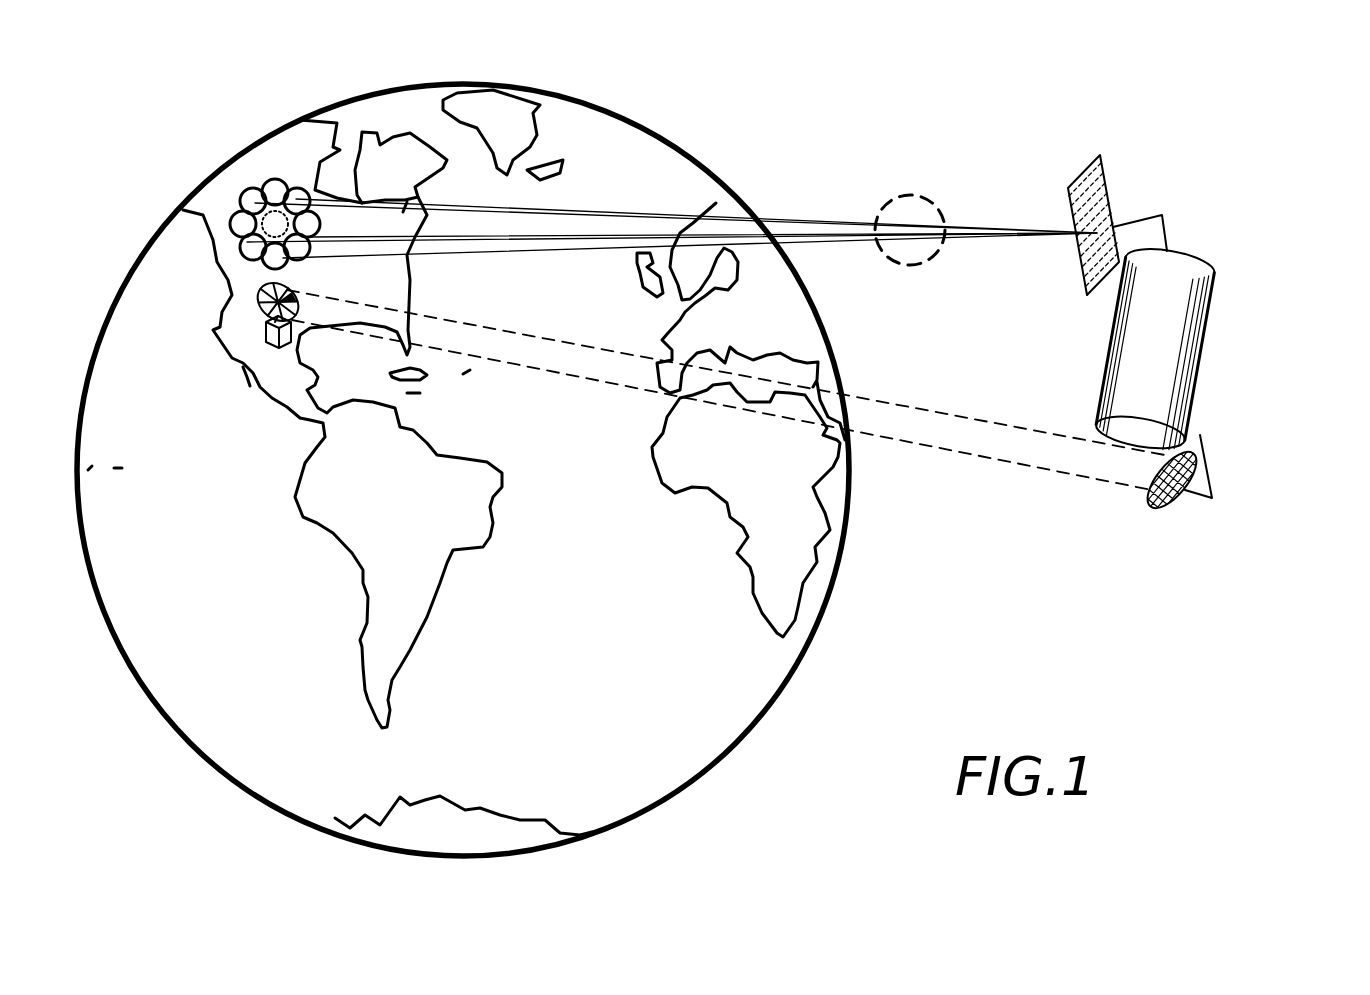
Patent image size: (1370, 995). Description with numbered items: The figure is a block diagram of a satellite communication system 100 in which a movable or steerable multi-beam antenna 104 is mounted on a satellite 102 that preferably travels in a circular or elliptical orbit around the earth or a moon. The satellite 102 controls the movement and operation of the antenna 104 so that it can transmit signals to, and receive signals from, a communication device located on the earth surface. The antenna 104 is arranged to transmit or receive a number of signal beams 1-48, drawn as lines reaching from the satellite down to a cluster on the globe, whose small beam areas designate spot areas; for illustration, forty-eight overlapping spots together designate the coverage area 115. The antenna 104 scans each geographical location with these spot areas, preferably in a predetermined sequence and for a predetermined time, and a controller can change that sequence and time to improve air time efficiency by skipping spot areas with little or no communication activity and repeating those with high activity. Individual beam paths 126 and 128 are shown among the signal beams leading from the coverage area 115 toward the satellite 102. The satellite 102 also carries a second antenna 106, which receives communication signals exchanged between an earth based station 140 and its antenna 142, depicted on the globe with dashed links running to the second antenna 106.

The satellite communication system 100 is at (1214, 134).
The satellite 102 is at (1197, 250).
The multi-beam antenna 104 is at (1070, 192).
The second antenna 106 is at (1145, 495).
The coverage area 115 is at (277, 180).
The uplink beam 126 is at (490, 238).
The downlink beam 128 is at (585, 248).
The earth based station 140 is at (263, 324).
The antenna 142 is at (262, 294).
The signal beams 1-48 is at (930, 193).